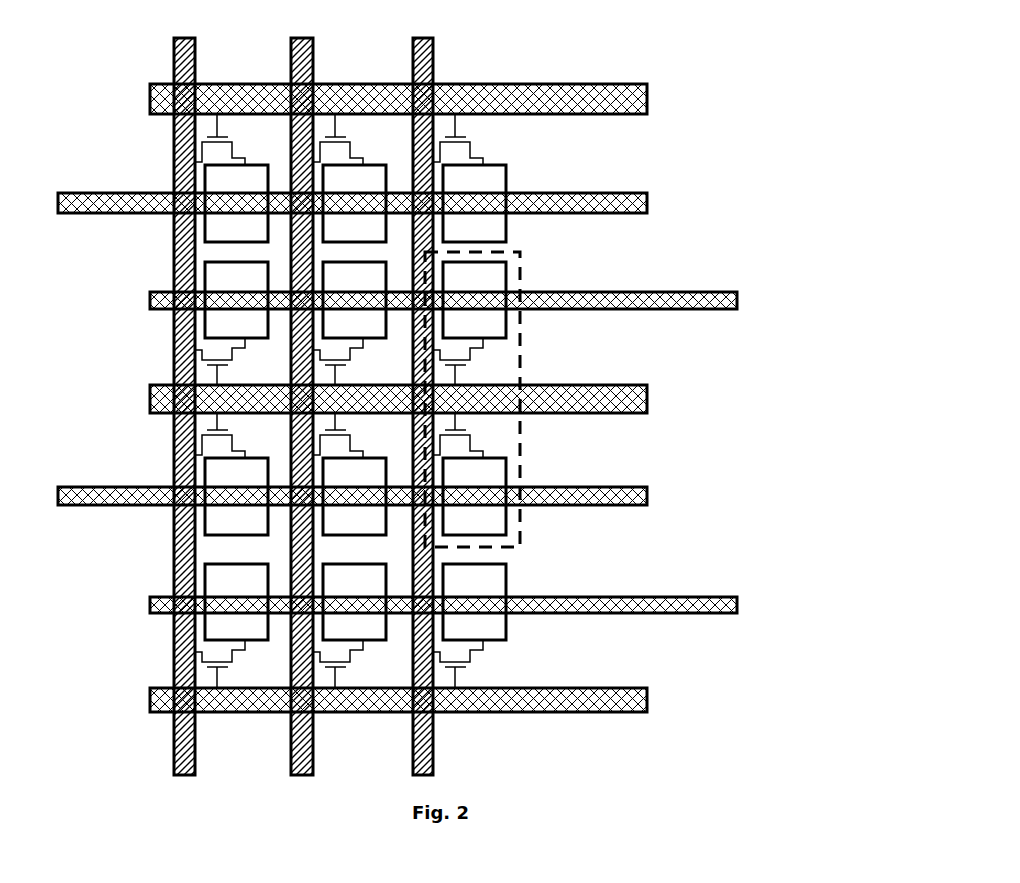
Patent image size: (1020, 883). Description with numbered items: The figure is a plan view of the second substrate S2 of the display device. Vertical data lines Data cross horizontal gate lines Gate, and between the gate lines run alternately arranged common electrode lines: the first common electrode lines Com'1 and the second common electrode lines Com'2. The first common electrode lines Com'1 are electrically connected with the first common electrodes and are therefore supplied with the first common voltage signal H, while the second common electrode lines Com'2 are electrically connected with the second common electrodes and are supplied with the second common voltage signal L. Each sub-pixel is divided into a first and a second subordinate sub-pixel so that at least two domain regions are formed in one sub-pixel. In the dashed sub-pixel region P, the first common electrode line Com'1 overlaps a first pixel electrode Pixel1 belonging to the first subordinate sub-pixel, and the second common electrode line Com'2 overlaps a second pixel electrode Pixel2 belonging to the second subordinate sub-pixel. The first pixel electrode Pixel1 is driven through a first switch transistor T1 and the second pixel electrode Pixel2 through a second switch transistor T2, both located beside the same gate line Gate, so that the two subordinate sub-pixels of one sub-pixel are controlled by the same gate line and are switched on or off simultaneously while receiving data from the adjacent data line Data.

The data line Data is at (433, 58).
The gate line Gate is at (620, 415).
The second common voltage signal L is at (345, 351).
The first common voltage signal H is at (452, 455).
The first common electrode line Com'1 is at (495, 325).
The second common electrode line Com'2 is at (352, 531).
The first pixel electrode Pixel1 is at (483, 320).
The second pixel electrode Pixel2 is at (483, 518).
The first switch transistor T1 is at (465, 361).
The second switch transistor T2 is at (465, 435).
The sub-pixel region P is at (522, 268).
The second substrate S2 is at (677, 127).